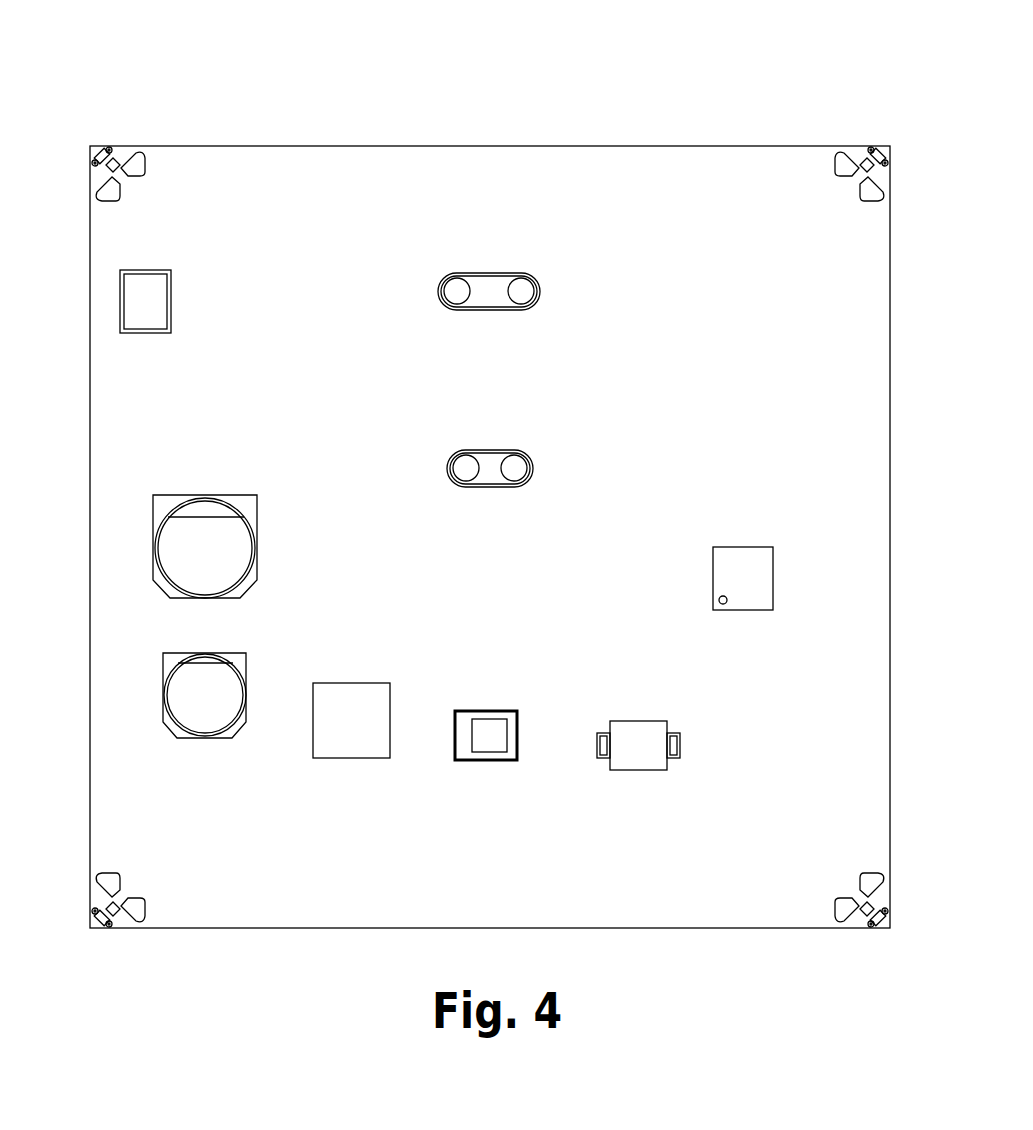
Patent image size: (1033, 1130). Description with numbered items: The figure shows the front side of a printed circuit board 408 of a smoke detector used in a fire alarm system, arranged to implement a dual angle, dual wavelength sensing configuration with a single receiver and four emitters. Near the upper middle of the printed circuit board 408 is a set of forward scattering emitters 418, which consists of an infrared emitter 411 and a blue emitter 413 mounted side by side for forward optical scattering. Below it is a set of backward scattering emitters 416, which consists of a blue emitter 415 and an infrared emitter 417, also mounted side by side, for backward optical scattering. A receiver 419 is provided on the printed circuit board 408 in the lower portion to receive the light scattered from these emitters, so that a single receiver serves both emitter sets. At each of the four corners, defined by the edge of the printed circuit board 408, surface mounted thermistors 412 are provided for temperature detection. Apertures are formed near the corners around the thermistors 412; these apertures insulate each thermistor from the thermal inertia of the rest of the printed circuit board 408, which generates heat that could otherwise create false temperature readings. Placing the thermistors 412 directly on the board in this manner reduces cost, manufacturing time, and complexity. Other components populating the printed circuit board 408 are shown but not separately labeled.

The printed circuit board 408 is at (491, 503).
The infrared emitter 411 is at (525, 284).
The surface mounted thermistors 412 is at (870, 152).
The blue emitter 413 is at (453, 276).
The blue emitter 415 is at (466, 470).
The set of backward scattering emitters 416 is at (491, 410).
The infrared emitter 417 is at (514, 468).
The set of forward scattering emitters 418 is at (489, 179).
The receiver 419 is at (463, 738).